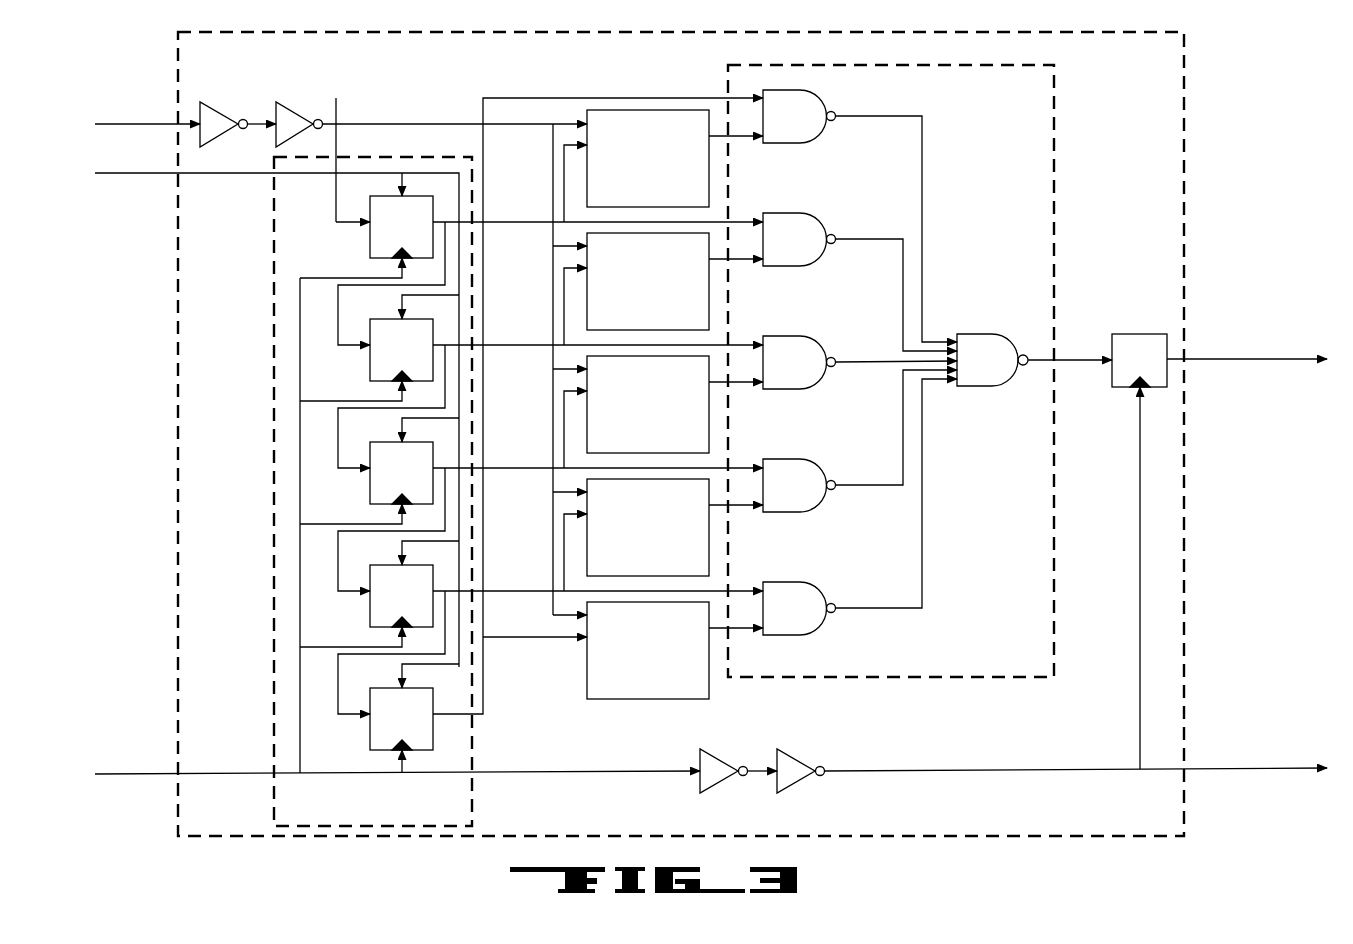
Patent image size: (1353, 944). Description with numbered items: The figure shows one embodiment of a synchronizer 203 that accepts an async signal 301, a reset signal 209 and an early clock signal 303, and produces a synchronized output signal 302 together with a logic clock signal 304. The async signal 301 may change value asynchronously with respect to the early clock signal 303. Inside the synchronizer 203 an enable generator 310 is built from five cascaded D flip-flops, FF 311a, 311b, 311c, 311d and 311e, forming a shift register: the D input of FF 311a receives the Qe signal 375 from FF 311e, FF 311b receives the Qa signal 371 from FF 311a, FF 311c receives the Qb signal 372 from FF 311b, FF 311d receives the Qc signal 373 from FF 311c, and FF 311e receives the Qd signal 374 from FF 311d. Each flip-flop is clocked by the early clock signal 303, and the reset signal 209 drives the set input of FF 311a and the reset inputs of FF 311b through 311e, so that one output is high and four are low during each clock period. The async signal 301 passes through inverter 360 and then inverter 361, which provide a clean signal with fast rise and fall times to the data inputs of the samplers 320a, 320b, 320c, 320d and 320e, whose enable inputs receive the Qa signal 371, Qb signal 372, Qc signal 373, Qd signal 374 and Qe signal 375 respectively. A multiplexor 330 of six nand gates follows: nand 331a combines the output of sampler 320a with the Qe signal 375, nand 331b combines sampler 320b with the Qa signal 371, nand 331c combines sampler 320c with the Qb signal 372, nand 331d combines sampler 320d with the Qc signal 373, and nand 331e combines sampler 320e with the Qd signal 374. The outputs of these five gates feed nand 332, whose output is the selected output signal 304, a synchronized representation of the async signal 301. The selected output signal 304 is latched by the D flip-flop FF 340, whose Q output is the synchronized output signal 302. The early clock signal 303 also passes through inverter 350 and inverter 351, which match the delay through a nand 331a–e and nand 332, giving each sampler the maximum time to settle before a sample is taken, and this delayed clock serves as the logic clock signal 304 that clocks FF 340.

The synchronizer 203 is at (1040, 816).
The async signal 301 is at (114, 106).
The reset signal 209 is at (243, 411).
The early clock signal 303 is at (361, 530).
The synchronized output signal 302 is at (1254, 324).
The selected output signal 304 is at (1075, 519).
The enable generator 310 is at (320, 821).
The D flip-flop 311a is at (366, 225).
The D flip-flop 311b is at (379, 311).
The D flip-flop 311c is at (379, 434).
The D flip-flop 311d is at (379, 557).
The D flip-flop 311e is at (393, 682).
The sampler 320a is at (672, 201).
The sampler 320b is at (672, 324).
The sampler 320c is at (672, 447).
The sampler 320d is at (672, 570).
The sampler 320e is at (672, 693).
The multiplexor 330 is at (906, 666).
The nand gate 331a is at (860, 206).
The nand gate 331b is at (860, 272).
The nand gate 331c is at (860, 352).
The nand gate 331d is at (860, 441).
The nand gate 331e is at (860, 507).
The nand gate 332 is at (989, 374).
The D flip-flop 340 is at (1135, 385).
The inverter 350 is at (733, 757).
The inverter 351 is at (802, 757).
The inverter 360 is at (234, 110).
The inverter 361 is at (429, 344).
The Qa signal 371 is at (598, 188).
The Qb signal 372 is at (598, 311).
The Qc signal 373 is at (598, 434).
The Qd signal 374 is at (598, 557).
The Qe signal 375 is at (598, 383).